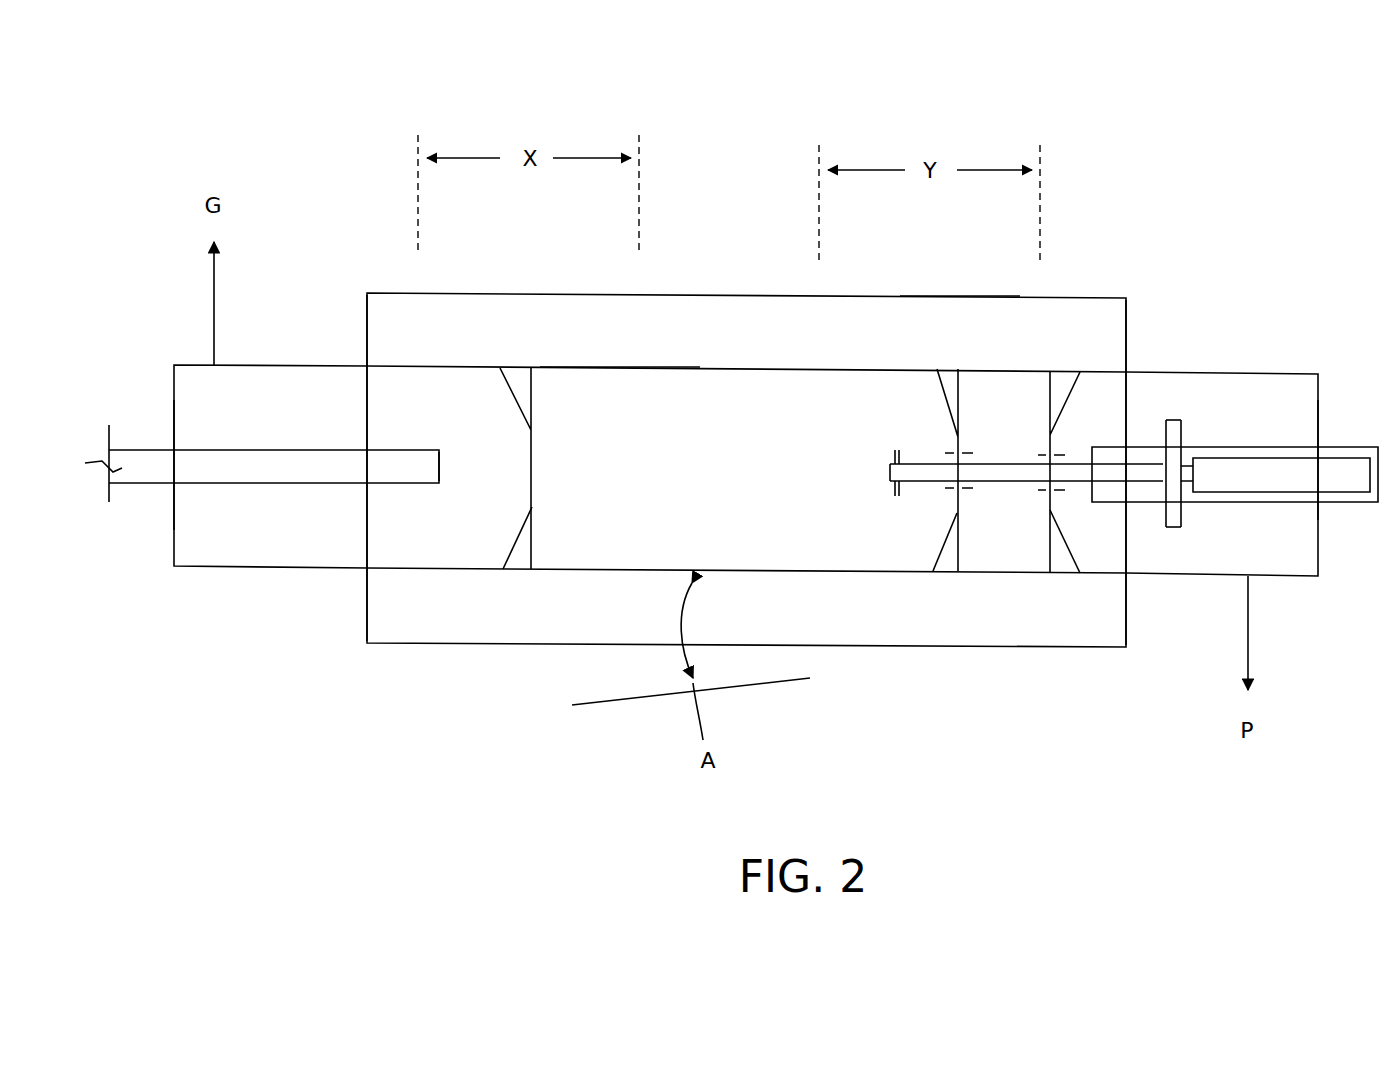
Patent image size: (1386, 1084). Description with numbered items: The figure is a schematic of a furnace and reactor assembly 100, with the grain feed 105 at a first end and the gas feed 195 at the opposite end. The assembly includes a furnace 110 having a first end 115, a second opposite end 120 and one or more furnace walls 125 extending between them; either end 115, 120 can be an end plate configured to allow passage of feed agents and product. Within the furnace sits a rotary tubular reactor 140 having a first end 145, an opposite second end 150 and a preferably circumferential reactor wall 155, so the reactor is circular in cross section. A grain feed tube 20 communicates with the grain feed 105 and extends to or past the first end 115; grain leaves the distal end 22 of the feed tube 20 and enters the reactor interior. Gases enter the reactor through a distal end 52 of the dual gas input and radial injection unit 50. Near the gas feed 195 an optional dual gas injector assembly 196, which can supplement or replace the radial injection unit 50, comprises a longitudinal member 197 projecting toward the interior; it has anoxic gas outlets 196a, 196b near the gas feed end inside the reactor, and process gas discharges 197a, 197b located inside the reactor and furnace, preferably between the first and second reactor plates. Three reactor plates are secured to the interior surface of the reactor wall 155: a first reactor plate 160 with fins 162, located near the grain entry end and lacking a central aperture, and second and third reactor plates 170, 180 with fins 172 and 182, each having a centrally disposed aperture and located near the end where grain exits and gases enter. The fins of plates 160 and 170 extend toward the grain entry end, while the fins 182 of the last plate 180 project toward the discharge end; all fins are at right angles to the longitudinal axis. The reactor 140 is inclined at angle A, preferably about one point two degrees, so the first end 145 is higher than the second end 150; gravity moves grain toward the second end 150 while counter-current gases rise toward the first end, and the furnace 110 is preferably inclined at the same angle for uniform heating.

The grain feed tube 20 is at (150, 467).
The distal end of the feed tube 22 is at (440, 468).
The dual gas input and radial injection unit 50 is at (1338, 480).
The distal end of the dual gas input and radial injection unit 52 is at (1183, 507).
The furnace and reactor assembly 100 is at (1098, 214).
The grain feed 105 is at (172, 447).
The furnace 110 is at (725, 293).
The first end of the furnace 115 is at (366, 343).
The second opposite end of the furnace 120 is at (1126, 342).
The furnace walls 125 is at (960, 298).
The rotary tubular reactor 140 is at (600, 368).
The first end of the reactor 145 is at (173, 532).
The second end of the reactor 150 is at (1318, 555).
The reactor wall 155 is at (828, 572).
The first reactor plate 160 is at (532, 463).
The fins of the first reactor plate 162 is at (525, 550).
The second reactor plate 170 is at (957, 443).
The fins of the second reactor plate 172 is at (950, 560).
The third reactor plate 180 is at (1067, 400).
The fins of the third reactor plate 182 is at (1067, 567).
The gas feed 195 is at (1318, 433).
The dual gas injector assembly 196 is at (1293, 447).
The anoxic gas outlet 196a is at (1181, 432).
The anoxic gas outlet 196b is at (1160, 513).
The longitudinal member 197 is at (1070, 482).
The process gas discharge 197a is at (901, 452).
The process gas discharge 197b is at (900, 492).